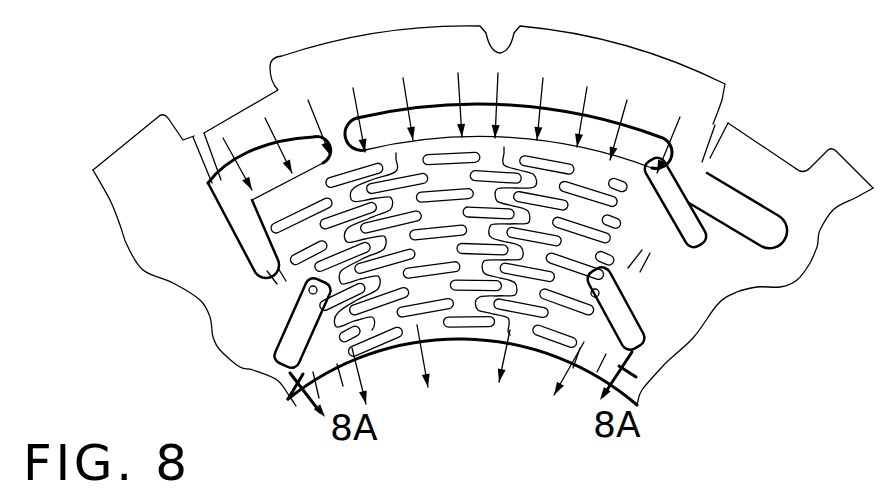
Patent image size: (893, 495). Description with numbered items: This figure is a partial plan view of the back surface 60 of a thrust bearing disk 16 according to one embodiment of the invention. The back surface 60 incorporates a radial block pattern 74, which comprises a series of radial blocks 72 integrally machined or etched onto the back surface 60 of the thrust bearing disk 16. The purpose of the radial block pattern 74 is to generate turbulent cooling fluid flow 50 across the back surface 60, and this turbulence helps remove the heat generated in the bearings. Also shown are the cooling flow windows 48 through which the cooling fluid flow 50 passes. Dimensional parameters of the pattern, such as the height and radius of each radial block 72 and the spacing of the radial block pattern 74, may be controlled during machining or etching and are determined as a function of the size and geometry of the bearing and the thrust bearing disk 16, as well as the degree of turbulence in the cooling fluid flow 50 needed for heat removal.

The thrust bearing disk 16 is at (153, 240).
The cooling flow windows 48 is at (587, 300).
The cooling fluid flow 50 is at (402, 108).
The back surface 60 is at (153, 167).
The radial blocks 72 is at (332, 322).
The radial block pattern 74 is at (340, 330).